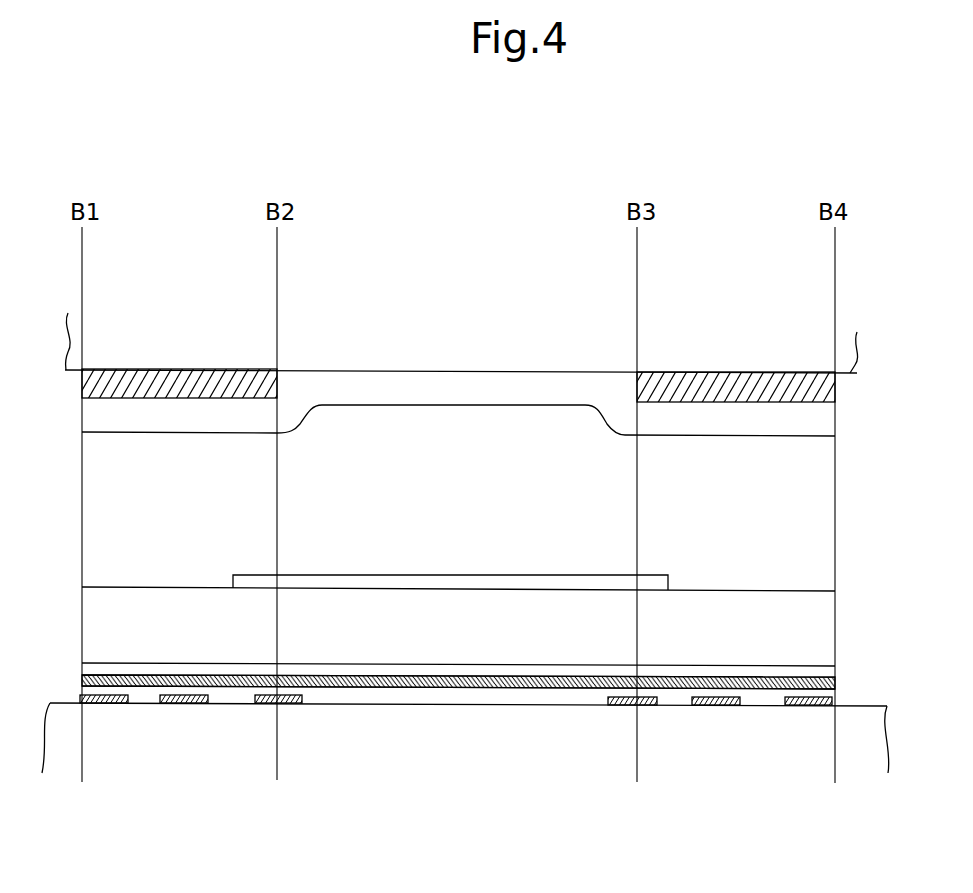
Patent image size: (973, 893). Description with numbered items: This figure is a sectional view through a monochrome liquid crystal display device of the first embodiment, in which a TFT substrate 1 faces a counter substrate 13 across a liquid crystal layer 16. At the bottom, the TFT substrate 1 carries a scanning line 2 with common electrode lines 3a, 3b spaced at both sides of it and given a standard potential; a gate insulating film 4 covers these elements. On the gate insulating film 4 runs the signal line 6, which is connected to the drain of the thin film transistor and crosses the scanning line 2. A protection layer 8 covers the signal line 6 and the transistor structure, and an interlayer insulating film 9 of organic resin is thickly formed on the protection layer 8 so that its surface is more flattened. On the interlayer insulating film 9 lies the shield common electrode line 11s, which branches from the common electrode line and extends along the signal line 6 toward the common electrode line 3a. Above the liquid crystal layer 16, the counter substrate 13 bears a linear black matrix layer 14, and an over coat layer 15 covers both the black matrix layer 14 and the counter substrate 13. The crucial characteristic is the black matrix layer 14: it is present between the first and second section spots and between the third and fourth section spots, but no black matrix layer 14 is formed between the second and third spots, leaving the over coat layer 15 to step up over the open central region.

The TFT substrate 1 is at (853, 706).
The scanning line 2 is at (185, 703).
The common electrode line 3a is at (95, 703).
The common electrode line 3b is at (288, 703).
The gate insulating film 4 is at (832, 693).
The signal line 6 is at (485, 690).
The protection layer 8 is at (827, 675).
The interlayer insulating film 9 is at (815, 633).
The shield common electrode line 11s is at (422, 583).
The counter substrate 13 is at (848, 372).
The black matrix layer 14 is at (228, 371).
The over coat layer 15 is at (823, 420).
The liquid crystal layer 16 is at (855, 443).